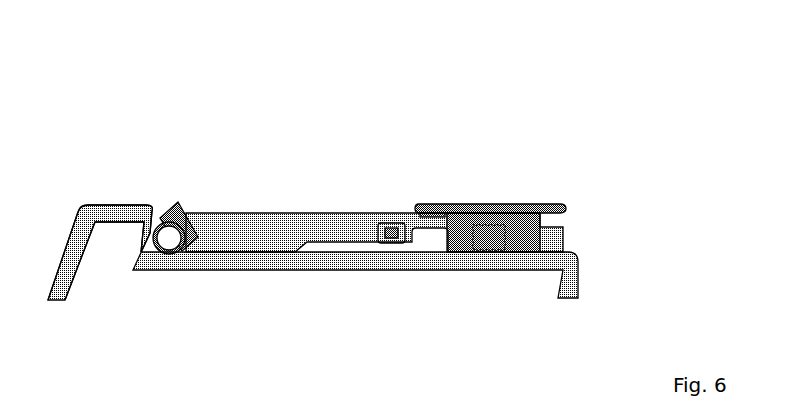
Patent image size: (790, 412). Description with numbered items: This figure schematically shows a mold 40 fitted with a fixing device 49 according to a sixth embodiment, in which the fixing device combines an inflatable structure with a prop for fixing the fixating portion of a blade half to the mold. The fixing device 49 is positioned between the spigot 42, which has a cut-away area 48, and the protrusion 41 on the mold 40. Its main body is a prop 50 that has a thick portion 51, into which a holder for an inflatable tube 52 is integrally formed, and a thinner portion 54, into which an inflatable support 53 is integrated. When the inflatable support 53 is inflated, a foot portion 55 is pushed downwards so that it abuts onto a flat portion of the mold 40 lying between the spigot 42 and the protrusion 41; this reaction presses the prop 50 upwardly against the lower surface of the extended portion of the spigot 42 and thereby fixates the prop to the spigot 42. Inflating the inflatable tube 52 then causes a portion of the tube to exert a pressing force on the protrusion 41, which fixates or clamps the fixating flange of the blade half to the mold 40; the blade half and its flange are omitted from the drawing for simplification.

The mold 40 is at (580, 264).
The protrusion 41 is at (115, 207).
The spigot 42 is at (495, 203).
The cut-away area 48 is at (432, 258).
The fixing device 49 is at (386, 82).
The prop 50 is at (268, 210).
The thick portion 51 is at (190, 188).
The inflatable tube 52 is at (182, 255).
The inflatable support 53 is at (380, 245).
The thinner portion 54 is at (363, 192).
The foot portion 55 is at (394, 243).